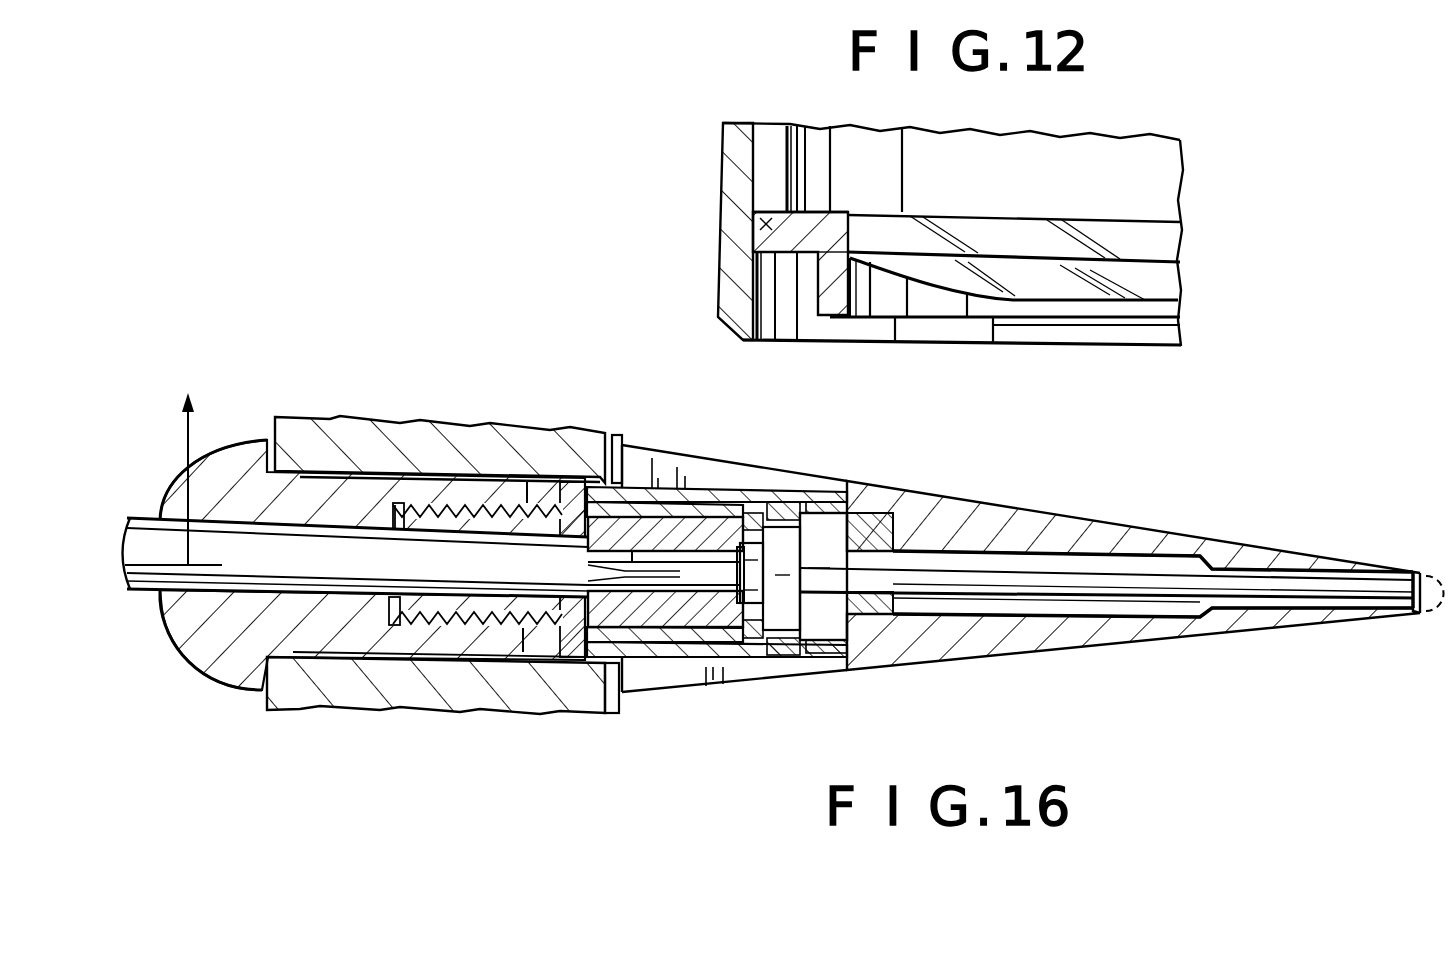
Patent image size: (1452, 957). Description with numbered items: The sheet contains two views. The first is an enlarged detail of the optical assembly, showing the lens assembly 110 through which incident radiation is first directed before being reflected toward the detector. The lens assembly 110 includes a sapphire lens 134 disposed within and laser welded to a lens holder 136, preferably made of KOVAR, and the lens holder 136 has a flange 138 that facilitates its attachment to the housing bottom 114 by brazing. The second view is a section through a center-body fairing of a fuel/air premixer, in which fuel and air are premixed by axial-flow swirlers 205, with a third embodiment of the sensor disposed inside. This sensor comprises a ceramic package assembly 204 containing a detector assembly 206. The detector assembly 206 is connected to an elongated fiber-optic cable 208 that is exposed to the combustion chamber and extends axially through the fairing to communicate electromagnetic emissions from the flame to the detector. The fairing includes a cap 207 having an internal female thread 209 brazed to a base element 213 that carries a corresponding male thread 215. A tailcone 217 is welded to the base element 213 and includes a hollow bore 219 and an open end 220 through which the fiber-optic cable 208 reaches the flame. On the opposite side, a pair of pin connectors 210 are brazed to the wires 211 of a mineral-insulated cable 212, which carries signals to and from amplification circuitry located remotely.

In FIG. 12, the lens assembly 110 is at (940, 298).
In FIG. 12, the housing bottom 114 is at (718, 267).
In FIG. 12, the sapphire lens 134 is at (1060, 283).
In FIG. 12, the lens holder 136 is at (817, 293).
In FIG. 12, the flange 138 is at (773, 232).
In FIG. 16, the ceramic package assembly 204 is at (855, 492).
In FIG. 16, the axial-flow swirlers 205 is at (490, 455).
In FIG. 16, the detector assembly 206 is at (802, 640).
In FIG. 16, the cap 207 is at (240, 660).
In FIG. 16, the fiber-optic cable 208 is at (993, 578).
In FIG. 16, the internal female thread 209 is at (345, 645).
In FIG. 16, the pin connectors 210 is at (685, 545).
In FIG. 16, the wires 211 is at (583, 573).
In FIG. 16, the mineral-insulated cable 212 is at (302, 428).
In FIG. 16, the base element 213 is at (487, 625).
In FIG. 16, the male thread 215 is at (530, 635).
In FIG. 16, the tailcone 217 is at (1117, 647).
In FIG. 16, the hollow bore 219 is at (1127, 563).
In FIG. 16, the open end 220 is at (1433, 587).